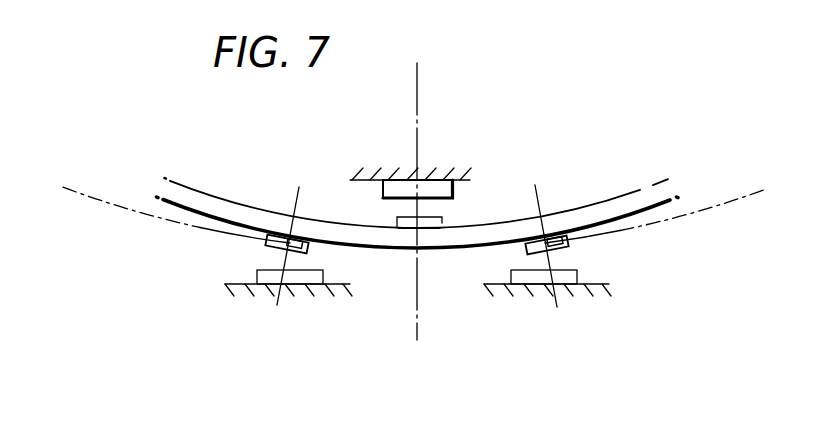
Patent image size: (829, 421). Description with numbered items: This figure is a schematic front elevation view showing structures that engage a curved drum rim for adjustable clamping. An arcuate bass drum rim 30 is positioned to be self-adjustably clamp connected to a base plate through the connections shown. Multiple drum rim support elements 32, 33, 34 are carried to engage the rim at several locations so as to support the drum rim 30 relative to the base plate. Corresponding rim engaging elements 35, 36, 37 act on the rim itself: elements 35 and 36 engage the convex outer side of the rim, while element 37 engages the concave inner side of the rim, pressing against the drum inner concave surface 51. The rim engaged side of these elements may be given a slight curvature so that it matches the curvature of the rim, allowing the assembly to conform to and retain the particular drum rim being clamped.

The arcuate bass drum rim 30 is at (647, 195).
The drum inner concave surface 51 is at (338, 227).
The drum rim support element 32 is at (283, 237).
The drum rim support element 33 is at (553, 237).
The drum rim support element 34 is at (410, 230).
The rim engaging element 35 is at (267, 251).
The rim engaging element 36 is at (566, 247).
The rim engaging element 37 is at (430, 225).